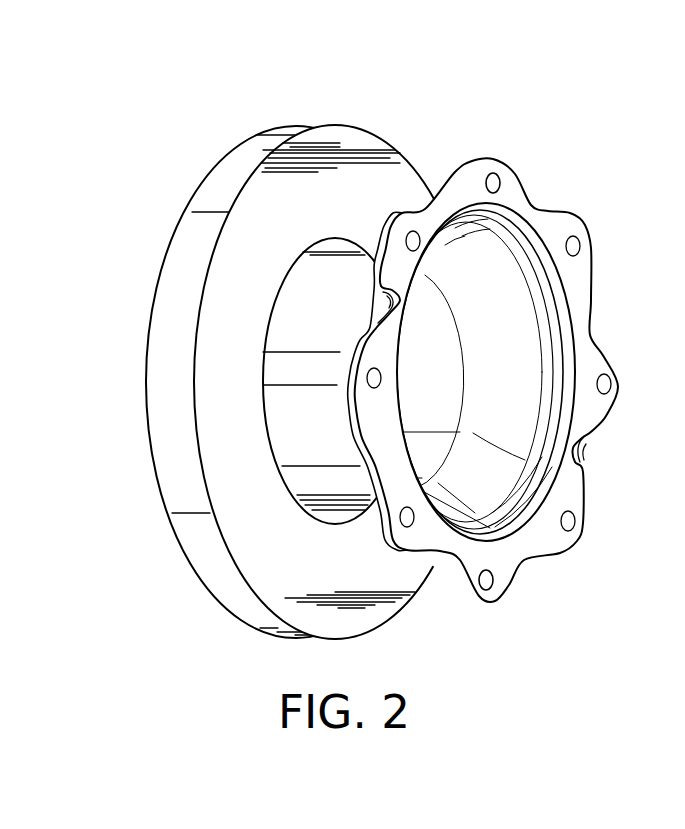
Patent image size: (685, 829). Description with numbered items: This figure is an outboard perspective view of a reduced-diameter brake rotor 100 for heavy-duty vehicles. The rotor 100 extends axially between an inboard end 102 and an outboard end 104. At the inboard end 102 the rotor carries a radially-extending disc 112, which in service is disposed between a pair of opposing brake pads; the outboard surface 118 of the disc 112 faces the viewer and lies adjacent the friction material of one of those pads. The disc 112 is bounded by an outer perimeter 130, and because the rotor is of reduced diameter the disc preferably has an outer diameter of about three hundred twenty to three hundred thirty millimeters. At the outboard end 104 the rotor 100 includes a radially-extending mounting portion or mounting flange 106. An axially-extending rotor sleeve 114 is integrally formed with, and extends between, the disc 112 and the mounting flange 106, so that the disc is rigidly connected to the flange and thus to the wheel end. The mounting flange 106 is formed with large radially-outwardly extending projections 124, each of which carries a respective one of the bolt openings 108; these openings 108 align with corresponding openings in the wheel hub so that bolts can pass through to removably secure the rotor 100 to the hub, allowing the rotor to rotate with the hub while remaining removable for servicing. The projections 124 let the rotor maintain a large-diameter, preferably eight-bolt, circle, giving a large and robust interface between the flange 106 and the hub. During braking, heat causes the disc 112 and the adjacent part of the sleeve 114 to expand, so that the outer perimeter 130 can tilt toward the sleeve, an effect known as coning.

The reduced-diameter brake rotor 100 is at (455, 78).
The inboard end 102 is at (221, 160).
The outboard end 104 is at (588, 275).
The mounting flange 106 is at (513, 195).
The openings 108 is at (499, 184).
The disc 112 is at (316, 126).
The rotor sleeve 114 is at (333, 485).
The outboard surface 118 is at (204, 439).
The projections 124 is at (496, 581).
The outer perimeter 130 is at (182, 264).